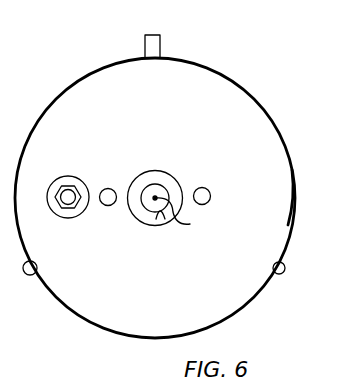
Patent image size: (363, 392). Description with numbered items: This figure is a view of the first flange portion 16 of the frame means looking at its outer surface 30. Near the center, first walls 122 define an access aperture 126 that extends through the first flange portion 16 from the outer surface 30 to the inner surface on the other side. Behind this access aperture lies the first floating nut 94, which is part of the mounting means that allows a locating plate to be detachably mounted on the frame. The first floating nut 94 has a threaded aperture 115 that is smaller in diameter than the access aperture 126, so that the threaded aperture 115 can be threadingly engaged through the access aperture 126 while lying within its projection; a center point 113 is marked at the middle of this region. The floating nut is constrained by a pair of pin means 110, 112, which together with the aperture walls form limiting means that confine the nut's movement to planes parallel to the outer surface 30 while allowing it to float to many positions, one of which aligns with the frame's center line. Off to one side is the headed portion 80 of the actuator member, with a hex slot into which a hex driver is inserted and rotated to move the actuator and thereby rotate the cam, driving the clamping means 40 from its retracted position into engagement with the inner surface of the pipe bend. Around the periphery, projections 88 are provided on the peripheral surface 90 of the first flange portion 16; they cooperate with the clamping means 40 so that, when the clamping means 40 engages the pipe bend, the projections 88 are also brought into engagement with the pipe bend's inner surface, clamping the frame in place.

The first flange portion 16 is at (268, 121).
The outer surface 30 is at (182, 312).
The clamping means 40 is at (161, 50).
The headed portion 80 is at (69, 176).
The projections 88 is at (33, 279).
The peripheral surface 90 is at (294, 197).
The first floating nut 94 is at (151, 171).
The pin means 110 is at (108, 206).
The pin means 112 is at (212, 187).
The center point 113 is at (153, 200).
The threaded aperture 115 is at (190, 224).
The first walls 122 is at (156, 173).
The access aperture 126 is at (157, 226).